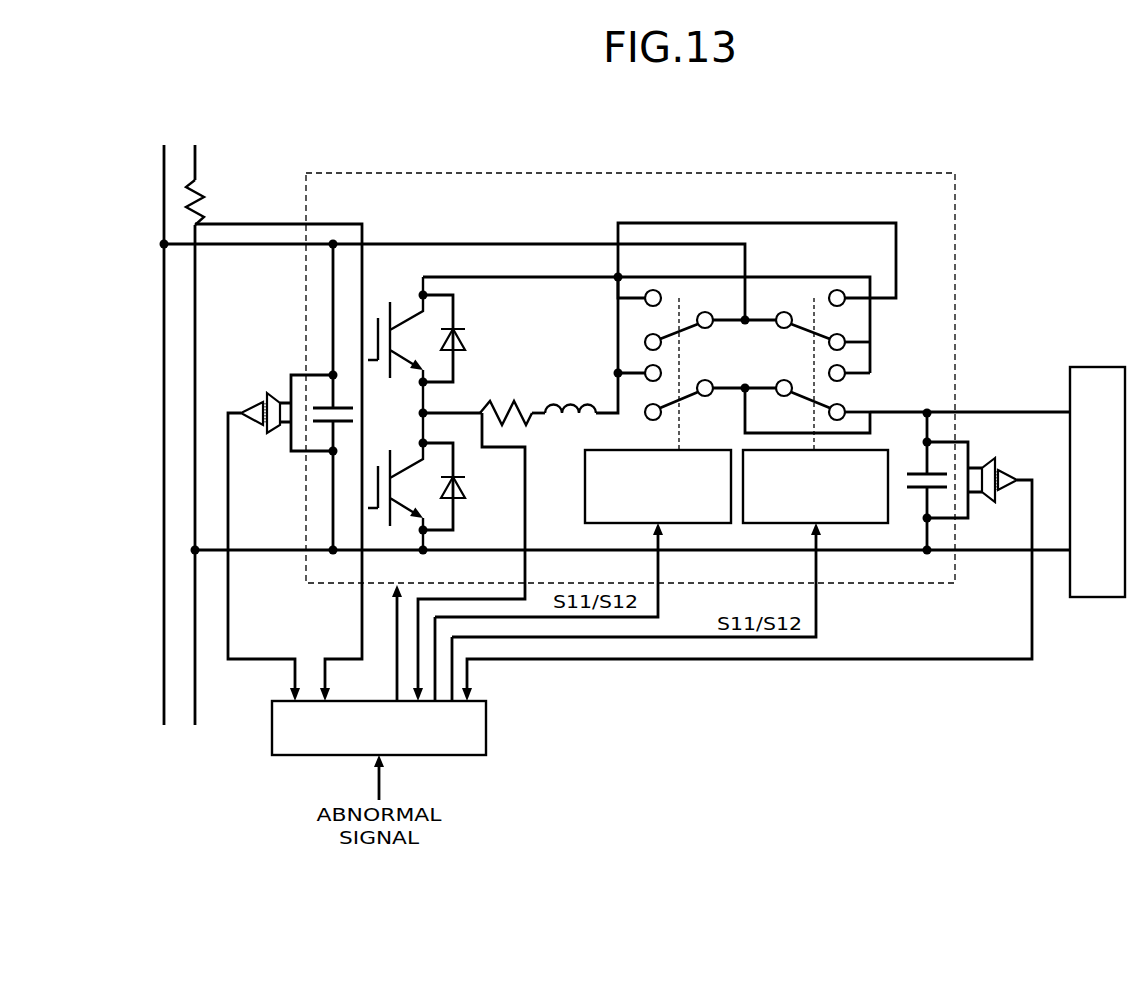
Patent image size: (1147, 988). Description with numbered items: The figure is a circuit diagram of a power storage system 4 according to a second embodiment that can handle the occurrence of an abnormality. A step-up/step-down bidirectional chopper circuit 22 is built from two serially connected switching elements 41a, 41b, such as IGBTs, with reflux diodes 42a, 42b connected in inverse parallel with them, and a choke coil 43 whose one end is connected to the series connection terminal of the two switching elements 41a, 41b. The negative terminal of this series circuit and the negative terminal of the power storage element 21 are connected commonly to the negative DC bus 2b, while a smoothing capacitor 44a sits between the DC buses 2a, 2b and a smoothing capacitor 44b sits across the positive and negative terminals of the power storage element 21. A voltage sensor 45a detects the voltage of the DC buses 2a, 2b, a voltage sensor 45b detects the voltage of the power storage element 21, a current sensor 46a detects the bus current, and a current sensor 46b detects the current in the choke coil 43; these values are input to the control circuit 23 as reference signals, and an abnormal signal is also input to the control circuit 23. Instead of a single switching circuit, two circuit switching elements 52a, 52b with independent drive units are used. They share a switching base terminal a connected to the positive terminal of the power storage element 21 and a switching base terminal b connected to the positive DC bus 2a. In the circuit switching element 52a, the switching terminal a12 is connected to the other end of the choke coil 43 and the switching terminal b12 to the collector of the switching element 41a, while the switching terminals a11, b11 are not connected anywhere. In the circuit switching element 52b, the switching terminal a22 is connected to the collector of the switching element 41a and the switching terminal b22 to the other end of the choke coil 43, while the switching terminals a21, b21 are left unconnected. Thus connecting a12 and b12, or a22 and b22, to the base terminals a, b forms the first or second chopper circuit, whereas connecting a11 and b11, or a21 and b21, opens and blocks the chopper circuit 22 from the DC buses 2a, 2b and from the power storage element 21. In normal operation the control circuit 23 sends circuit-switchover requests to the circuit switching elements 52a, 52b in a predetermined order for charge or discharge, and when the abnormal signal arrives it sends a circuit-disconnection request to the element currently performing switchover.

The power storage system 4 is at (760, 144).
The positive DC bus 2a is at (164, 272).
The negative DC bus 2b is at (195, 272).
The power storage element 21 is at (1097, 367).
The step-up/step-down bidirectional chopper circuit 22 is at (955, 209).
The control circuit 23 is at (486, 720).
The switching element 41a is at (373, 337).
The switching element 41b is at (373, 490).
The reflux diode 42a is at (466, 340).
The reflux diode 42b is at (452, 500).
The choke coil 43 is at (566, 404).
The smoothing capacitor 44a is at (320, 400).
The smoothing capacitor 44b is at (913, 494).
The voltage sensor 45a is at (257, 405).
The voltage sensor 45b is at (1008, 468).
The current sensor 46a is at (202, 197).
The current sensor 46b is at (502, 400).
The circuit switching element 52a is at (585, 493).
The circuit switching element 52b is at (858, 524).
The switching base terminal a is at (765, 398).
The switching base terminal b is at (745, 330).
The switching terminal a11 is at (645, 415).
The switching terminal a12 is at (661, 372).
The switching terminal a21 is at (846, 412).
The switching terminal a22 is at (829, 373).
The switching terminal b11 is at (644, 345).
The switching terminal b12 is at (662, 298).
The switching terminal b21 is at (846, 346).
The switching terminal b22 is at (828, 300).